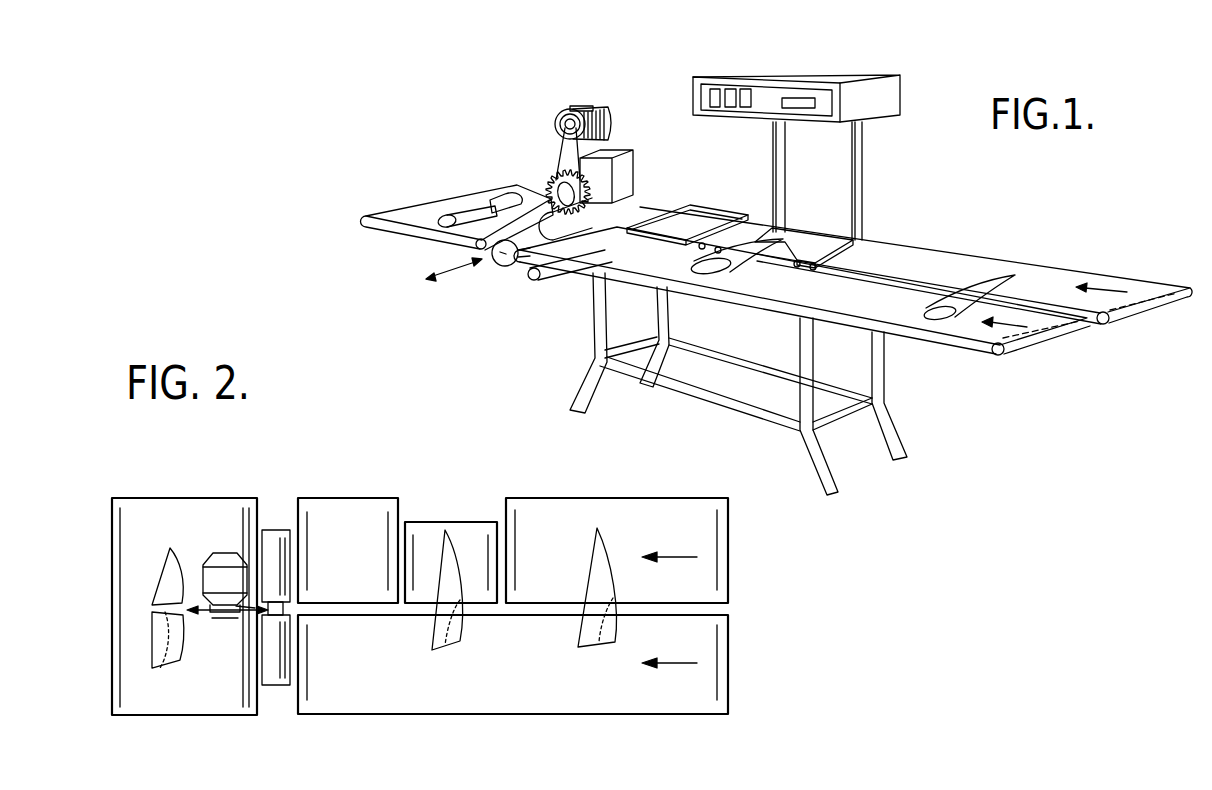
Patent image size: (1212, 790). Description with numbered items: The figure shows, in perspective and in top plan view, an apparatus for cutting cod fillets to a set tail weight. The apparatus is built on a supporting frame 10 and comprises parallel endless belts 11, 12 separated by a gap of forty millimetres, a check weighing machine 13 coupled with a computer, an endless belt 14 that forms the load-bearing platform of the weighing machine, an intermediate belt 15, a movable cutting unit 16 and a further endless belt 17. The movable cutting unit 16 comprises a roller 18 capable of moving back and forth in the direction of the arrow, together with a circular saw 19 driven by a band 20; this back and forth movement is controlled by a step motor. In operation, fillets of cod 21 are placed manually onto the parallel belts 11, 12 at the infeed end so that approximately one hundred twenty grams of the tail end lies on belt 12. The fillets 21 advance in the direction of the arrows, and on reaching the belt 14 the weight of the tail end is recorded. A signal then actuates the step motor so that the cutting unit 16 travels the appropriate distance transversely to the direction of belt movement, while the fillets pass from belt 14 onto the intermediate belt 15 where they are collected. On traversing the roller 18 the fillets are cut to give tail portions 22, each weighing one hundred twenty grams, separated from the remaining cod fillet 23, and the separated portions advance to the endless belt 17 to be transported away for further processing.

In FIG. 1, the supporting frame 10 is at (592, 331).
In FIG. 1, the endless belt 11 is at (1055, 360).
In FIG. 2, the endless belt 11 is at (737, 686).
In FIG. 1, the endless belt 12 is at (1138, 324).
In FIG. 2, the endless belt 12 is at (736, 571).
In FIG. 1, the check weighing machine 13 is at (794, 91).
In FIG. 1, the endless belt 14 is at (803, 238).
In FIG. 2, the endless belt 14 is at (467, 530).
In FIG. 1, the intermediate belt 15 is at (703, 221).
In FIG. 2, the intermediate belt 15 is at (347, 508).
In FIG. 1, the movable cutting unit 16 is at (590, 98).
In FIG. 2, the movable cutting unit 16 is at (223, 553).
In FIG. 1, the endless belt 17 is at (492, 187).
In FIG. 2, the endless belt 17 is at (143, 515).
In FIG. 1, the roller 18 is at (497, 266).
In FIG. 2, the roller 18 is at (270, 543).
In FIG. 1, the circular saw 19 is at (550, 178).
In FIG. 2, the circular saw 19 is at (243, 617).
In FIG. 1, the band 20 is at (560, 148).
In FIG. 1, the fillets of cod 21 is at (967, 300).
In FIG. 2, the fillets of cod 21 is at (595, 552).
In FIG. 1, the tail portions 22 is at (472, 200).
In FIG. 2, the tail portions 22 is at (162, 592).
In FIG. 1, the remaining cod fillet 23 is at (457, 215).
In FIG. 2, the remaining cod fillet 23 is at (155, 655).